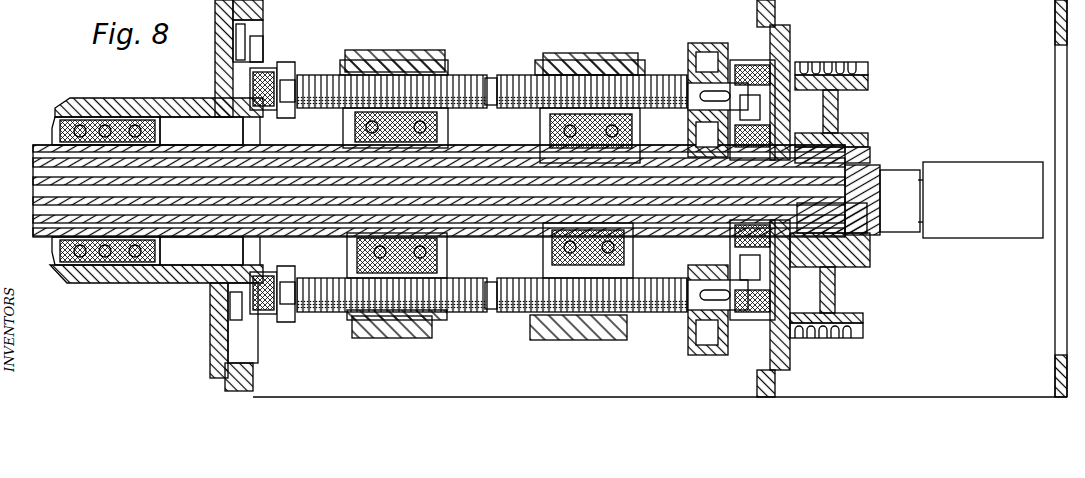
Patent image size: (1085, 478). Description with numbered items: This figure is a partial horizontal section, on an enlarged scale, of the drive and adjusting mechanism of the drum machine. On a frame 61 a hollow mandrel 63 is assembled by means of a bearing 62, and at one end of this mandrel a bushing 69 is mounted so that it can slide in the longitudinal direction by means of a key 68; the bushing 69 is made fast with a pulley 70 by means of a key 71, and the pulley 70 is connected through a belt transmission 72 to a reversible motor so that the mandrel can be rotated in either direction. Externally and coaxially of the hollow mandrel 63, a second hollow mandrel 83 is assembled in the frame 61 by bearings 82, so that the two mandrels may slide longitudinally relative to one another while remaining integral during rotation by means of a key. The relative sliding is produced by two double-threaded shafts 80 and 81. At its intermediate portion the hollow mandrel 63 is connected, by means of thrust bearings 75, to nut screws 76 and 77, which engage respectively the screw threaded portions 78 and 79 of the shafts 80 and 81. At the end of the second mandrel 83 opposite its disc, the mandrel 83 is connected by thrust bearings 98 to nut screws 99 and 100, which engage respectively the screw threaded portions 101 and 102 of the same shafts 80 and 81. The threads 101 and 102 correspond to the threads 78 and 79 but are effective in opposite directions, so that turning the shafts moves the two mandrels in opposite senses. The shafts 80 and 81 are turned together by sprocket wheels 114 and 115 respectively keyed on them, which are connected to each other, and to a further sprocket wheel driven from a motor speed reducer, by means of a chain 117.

The frame 61 is at (1060, 30).
The bearing 62 is at (786, 268).
The hollow mandrel 63 is at (467, 162).
The key 68 is at (848, 250).
The bushing 69 is at (870, 172).
The pulley 70 is at (858, 80).
The key 71 is at (848, 158).
The belt transmission 72 is at (838, 61).
The thrust bearings 75 is at (552, 141).
The nut screw 76 is at (580, 68).
The nut screw 77 is at (580, 315).
The screw threaded portion 78 is at (520, 75).
The screw threaded portion 79 is at (517, 315).
The double-threaded shaft 80 is at (488, 76).
The double-threaded shaft 81 is at (484, 305).
The bearings 82 is at (92, 103).
The second hollow mandrel 83 is at (170, 150).
The thrust bearings 98 is at (352, 137).
The nut screw 99 is at (385, 68).
The nut screw 100 is at (378, 325).
The screw threaded portion 101 is at (311, 73).
The screw threaded portion 102 is at (320, 314).
The sprocket wheel 114 is at (700, 48).
The sprocket wheel 115 is at (690, 330).
The chain 117 is at (692, 244).